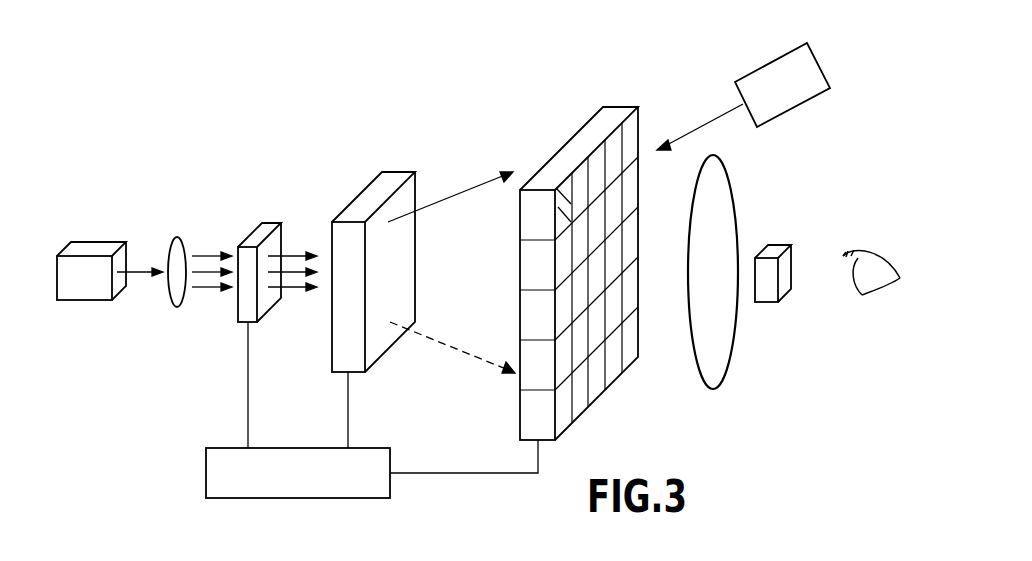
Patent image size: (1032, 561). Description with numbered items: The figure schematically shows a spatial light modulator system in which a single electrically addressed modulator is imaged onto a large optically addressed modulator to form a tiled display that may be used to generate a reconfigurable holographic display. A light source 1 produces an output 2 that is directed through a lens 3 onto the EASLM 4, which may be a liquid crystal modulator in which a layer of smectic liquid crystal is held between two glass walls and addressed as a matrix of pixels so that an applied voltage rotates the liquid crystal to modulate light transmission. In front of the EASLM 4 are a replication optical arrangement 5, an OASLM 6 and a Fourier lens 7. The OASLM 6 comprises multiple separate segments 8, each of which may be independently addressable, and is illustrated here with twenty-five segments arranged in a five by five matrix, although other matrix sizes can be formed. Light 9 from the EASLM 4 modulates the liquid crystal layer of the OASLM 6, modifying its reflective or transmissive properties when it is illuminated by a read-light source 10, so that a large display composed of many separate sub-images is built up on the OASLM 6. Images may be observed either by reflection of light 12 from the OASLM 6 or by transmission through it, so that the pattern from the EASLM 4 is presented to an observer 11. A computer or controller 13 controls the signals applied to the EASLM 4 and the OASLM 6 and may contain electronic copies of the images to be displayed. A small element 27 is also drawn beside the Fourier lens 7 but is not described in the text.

The light source 1 is at (100, 242).
The output 2 is at (137, 275).
The lens 3 is at (177, 237).
The EASLM 4 is at (276, 222).
The replication optical arrangement 5 is at (400, 172).
The OASLM 6 is at (568, 124).
The Fourier lens 7 is at (712, 392).
The separate segments 8 is at (560, 213).
The light 9 is at (467, 190).
The read-light source 10 is at (770, 62).
The observer 11 is at (868, 255).
The light 12 is at (700, 125).
The controller 13 is at (206, 473).
The detector 27 is at (782, 245).